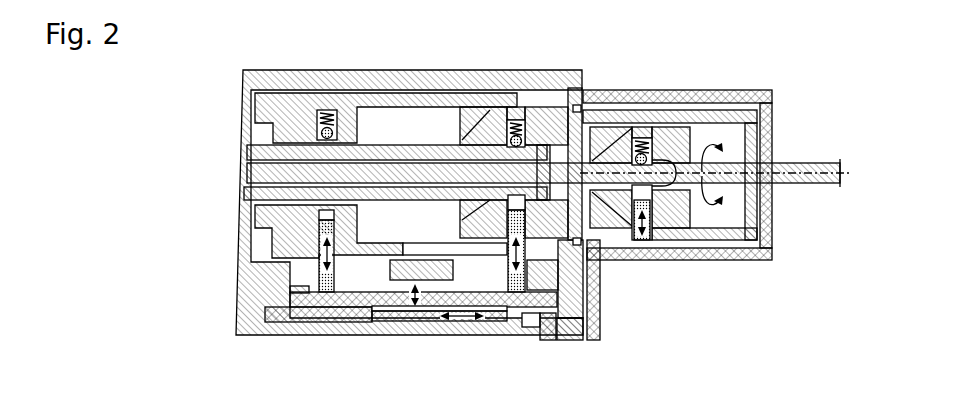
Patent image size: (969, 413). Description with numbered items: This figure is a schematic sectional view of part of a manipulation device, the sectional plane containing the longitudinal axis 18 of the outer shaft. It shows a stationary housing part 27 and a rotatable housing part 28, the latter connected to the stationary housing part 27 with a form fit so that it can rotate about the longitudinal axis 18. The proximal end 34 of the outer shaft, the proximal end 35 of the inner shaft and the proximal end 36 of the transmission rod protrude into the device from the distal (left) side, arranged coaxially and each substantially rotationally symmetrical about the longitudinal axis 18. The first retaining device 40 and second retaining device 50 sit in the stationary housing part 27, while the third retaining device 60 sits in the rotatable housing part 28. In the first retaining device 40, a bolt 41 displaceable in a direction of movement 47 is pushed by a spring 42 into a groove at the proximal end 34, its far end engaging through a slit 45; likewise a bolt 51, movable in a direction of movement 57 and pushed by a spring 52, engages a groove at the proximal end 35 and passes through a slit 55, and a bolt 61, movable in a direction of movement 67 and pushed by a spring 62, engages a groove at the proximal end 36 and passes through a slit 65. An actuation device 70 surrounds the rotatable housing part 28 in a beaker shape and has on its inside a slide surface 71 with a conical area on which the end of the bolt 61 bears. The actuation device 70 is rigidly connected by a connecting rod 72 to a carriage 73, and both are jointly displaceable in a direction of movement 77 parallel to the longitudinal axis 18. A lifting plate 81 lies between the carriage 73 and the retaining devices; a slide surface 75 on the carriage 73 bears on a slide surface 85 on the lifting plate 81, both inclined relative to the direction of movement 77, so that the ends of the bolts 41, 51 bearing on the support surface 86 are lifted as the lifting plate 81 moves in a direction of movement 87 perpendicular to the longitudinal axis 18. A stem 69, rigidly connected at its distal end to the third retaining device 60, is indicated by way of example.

The longitudinal axis 18 is at (820, 163).
The stationary housing part 27 is at (428, 78).
The rotatable housing part 28 is at (756, 222).
The proximal end of the outer shaft 34 is at (285, 141).
The proximal end of the inner shaft 35 is at (478, 160).
The proximal end of the transmission rod 36 is at (605, 165).
The first retaining device 40 is at (312, 97).
The bolt 41 is at (334, 131).
The spring 42 is at (327, 117).
The slit 45 is at (365, 262).
The direction of movement 47 is at (320, 258).
The second retaining device 50 is at (502, 112).
The bolt 51 is at (530, 139).
The spring 52 is at (518, 126).
The slit 55 is at (462, 262).
The direction of movement 57 is at (598, 262).
The third retaining device 60 is at (640, 133).
The bolt 61 is at (652, 162).
The spring 62 is at (646, 157).
The slit 65 is at (668, 240).
The direction of movement 67 is at (702, 242).
The stem 69 is at (787, 163).
The actuation device 70 is at (756, 258).
The slide surface 71 is at (645, 218).
The connecting rod 72 is at (573, 337).
The carriage 73 is at (534, 320).
The slide surface 75 is at (497, 311).
The direction of movement 77 is at (460, 318).
The lifting plate 81 is at (360, 310).
The slide surface 85 is at (490, 311).
The support surface 86 is at (304, 292).
The direction of movement 87 is at (411, 298).